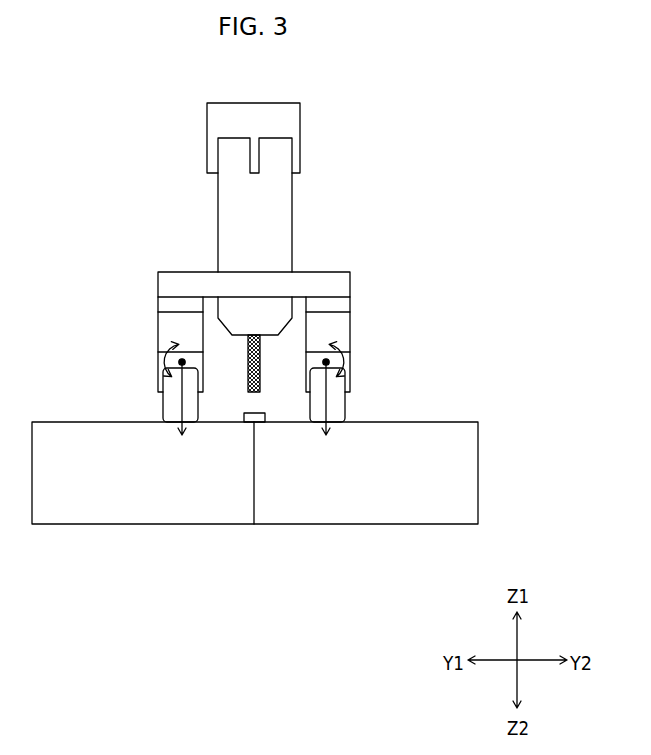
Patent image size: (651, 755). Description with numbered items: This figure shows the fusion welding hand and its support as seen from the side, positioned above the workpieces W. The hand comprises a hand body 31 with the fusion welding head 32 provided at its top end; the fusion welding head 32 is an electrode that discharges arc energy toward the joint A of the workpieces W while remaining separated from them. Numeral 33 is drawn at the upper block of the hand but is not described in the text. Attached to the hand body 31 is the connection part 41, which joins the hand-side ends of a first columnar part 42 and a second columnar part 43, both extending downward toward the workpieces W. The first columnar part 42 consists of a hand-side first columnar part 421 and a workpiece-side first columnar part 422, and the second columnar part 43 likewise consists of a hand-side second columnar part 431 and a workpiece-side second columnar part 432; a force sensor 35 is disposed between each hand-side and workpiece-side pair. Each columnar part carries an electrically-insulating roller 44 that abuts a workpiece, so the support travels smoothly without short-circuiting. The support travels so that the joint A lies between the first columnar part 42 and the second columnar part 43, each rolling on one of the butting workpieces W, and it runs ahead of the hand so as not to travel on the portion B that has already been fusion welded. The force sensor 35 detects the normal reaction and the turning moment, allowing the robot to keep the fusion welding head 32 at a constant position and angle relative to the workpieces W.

The hand body 31 is at (221, 196).
The fusion welding head 32 is at (254, 335).
The head block 33 is at (209, 119).
The force sensor 35 is at (202, 335).
The connection part 41 is at (172, 272).
The first columnar part 42 is at (132, 343).
The hand-side first columnar part 421 is at (158, 308).
The workpiece-side first columnar part 422 is at (158, 360).
The second columnar part 43 is at (380, 343).
The hand-side second columnar part 431 is at (348, 305).
The workpiece-side second columnar part 432 is at (350, 358).
The roller 44 is at (165, 404).
The workpieces W is at (137, 526).
The joint A is at (259, 534).
The portion having been fusion welded B is at (258, 424).